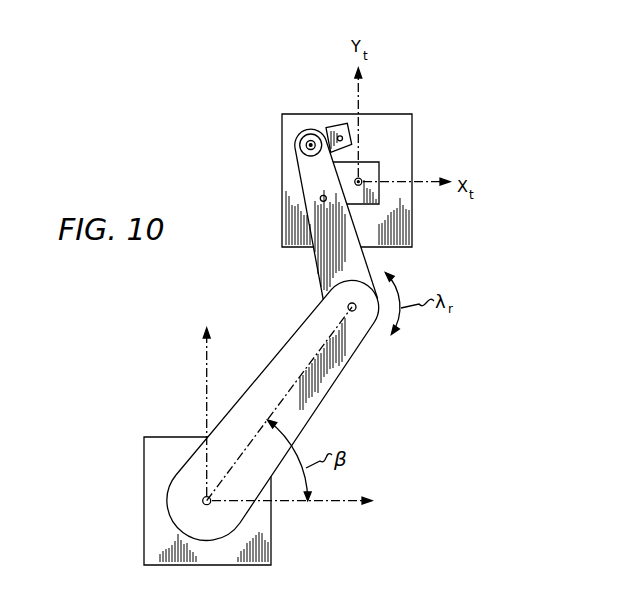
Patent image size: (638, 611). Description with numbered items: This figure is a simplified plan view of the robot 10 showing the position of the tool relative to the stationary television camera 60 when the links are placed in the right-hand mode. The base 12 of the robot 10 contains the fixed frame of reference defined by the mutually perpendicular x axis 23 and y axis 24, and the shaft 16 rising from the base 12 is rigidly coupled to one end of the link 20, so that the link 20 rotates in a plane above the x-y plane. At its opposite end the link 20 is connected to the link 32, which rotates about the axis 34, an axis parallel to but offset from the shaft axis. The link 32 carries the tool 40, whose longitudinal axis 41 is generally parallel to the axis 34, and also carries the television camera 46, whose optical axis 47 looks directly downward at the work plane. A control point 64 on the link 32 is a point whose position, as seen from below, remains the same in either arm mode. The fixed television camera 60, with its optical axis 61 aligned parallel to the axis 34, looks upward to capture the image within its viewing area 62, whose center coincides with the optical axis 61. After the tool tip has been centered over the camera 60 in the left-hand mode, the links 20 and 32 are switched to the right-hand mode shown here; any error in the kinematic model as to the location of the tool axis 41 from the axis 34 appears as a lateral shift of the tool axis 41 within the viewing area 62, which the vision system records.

The robot 10 is at (63, 523).
The base 12 is at (144, 543).
The shaft 16 is at (203, 500).
The link 20 is at (322, 405).
The x axis 23 is at (341, 503).
The y axis 24 is at (205, 388).
The link 32 is at (311, 224).
The axis 34 is at (348, 304).
The tool 40 is at (304, 138).
The longitudinal axis 41 is at (306, 145).
The television camera 46 is at (327, 129).
The optical axis 47 is at (340, 135).
The television camera 60 is at (380, 172).
The optical axis 61 is at (359, 178).
The viewing area 62 is at (412, 135).
The control point 64 is at (320, 199).